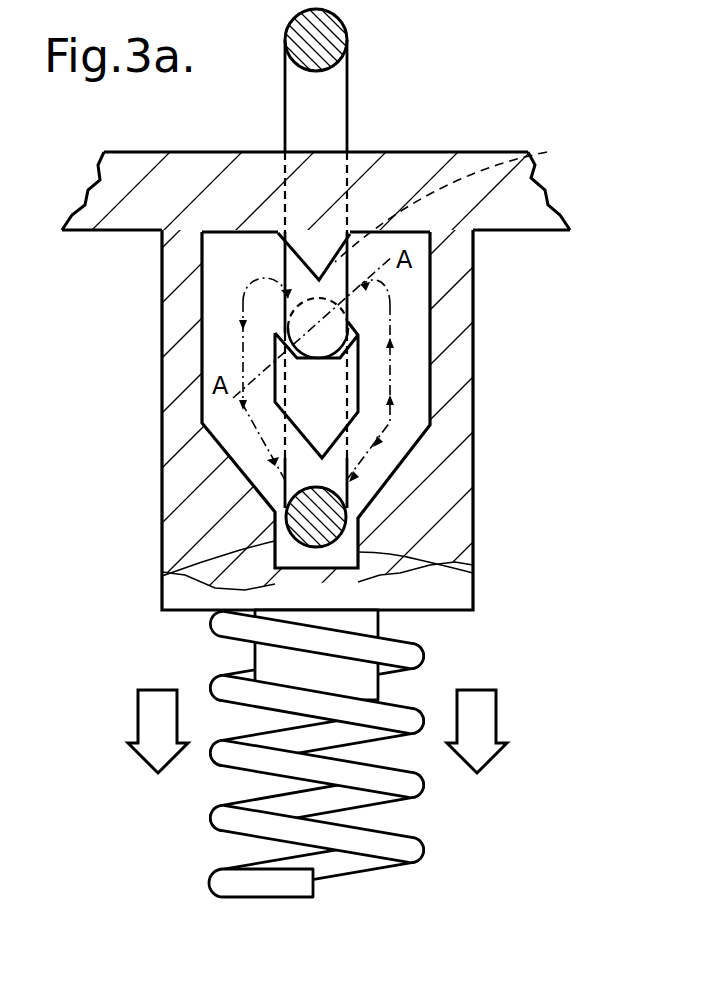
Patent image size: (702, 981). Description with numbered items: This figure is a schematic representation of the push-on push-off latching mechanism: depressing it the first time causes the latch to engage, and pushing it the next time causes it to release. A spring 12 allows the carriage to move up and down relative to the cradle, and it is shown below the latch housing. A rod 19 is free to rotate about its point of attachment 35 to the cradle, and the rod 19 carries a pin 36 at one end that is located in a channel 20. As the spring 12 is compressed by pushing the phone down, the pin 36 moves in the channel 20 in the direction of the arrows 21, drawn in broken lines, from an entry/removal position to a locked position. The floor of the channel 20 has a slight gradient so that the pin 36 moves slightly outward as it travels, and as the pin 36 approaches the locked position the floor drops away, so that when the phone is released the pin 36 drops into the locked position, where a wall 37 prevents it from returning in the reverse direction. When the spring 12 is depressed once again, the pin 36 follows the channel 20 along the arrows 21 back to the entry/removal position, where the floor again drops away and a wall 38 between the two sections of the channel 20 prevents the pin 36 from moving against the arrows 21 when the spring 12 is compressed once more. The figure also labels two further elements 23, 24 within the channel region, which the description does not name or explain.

The spring 12 is at (407, 843).
The rod 19 is at (337, 177).
The channel 20 is at (473, 572).
The arrows 21 is at (405, 425).
The ball 23 is at (285, 345).
The ball seat sleeve 24 is at (297, 358).
The point of attachment 35 is at (330, 37).
The pin 36 is at (162, 572).
The wall 37 is at (301, 199).
The wall 38 is at (285, 517).